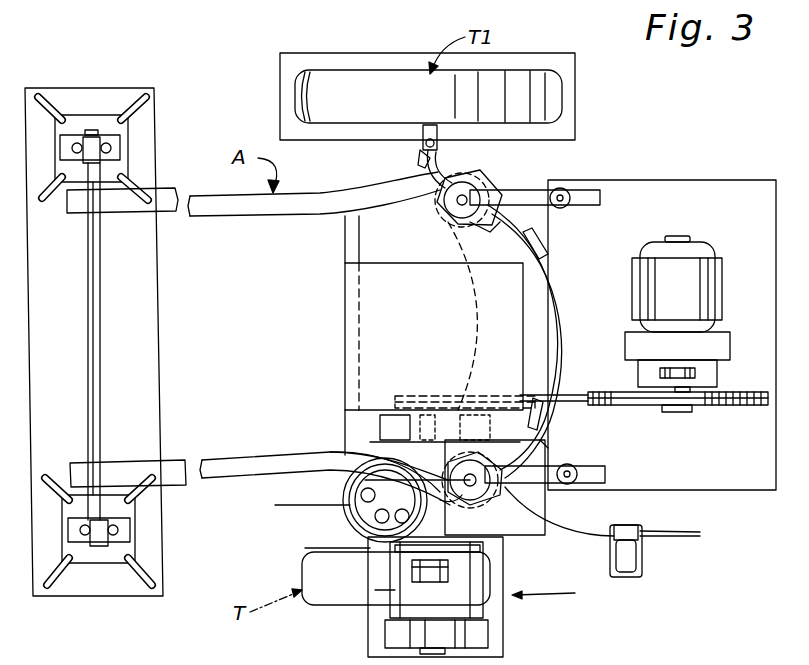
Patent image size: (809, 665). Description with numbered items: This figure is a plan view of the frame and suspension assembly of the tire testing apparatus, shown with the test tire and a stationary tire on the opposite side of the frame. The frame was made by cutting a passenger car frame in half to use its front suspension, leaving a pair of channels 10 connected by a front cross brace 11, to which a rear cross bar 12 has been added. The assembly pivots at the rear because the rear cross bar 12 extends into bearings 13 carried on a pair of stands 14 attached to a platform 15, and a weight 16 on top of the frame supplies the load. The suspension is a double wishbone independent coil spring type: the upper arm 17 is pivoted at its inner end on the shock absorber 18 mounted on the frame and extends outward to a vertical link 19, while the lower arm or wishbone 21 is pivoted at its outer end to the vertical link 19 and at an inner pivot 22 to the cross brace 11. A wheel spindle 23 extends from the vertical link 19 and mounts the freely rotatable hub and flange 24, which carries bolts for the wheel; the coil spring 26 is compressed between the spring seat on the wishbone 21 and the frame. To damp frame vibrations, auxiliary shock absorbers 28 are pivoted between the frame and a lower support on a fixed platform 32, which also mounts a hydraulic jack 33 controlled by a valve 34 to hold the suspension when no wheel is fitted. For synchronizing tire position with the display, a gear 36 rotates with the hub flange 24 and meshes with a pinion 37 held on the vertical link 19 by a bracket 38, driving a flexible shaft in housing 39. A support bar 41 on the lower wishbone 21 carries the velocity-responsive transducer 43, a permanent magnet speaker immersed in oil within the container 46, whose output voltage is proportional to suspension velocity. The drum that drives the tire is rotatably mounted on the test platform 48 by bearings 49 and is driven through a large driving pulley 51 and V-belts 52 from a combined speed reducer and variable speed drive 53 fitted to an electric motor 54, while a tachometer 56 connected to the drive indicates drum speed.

The channels 10 is at (598, 196).
The front cross brace 11 is at (552, 318).
The rear cross bar 12 is at (95, 298).
The bearings 13 is at (110, 142).
The stands 14 is at (118, 172).
The platform 15 is at (143, 325).
The weight 16 is at (378, 322).
The upper arm 17 is at (472, 184).
The shock absorber 18 is at (478, 225).
The vertical link 19 is at (420, 156).
The lower arm or wishbone 21 is at (432, 178).
The inner pivot 22 is at (540, 252).
The wheel spindle 23 is at (436, 127).
The hub and flange 24 is at (375, 590).
The coil spring 26 is at (440, 210).
The auxiliary shock absorbers 28 is at (572, 207).
The fixed platform 32 is at (700, 480).
The hydraulic jack 33 is at (495, 512).
The valve 34 is at (645, 542).
The gear 36 is at (480, 580).
The pinion 37 is at (325, 549).
The bracket 38 is at (470, 555).
The housing 39 is at (300, 505).
The support bar 41 is at (370, 480).
The transducer 43 is at (365, 485).
The container 46 is at (360, 515).
The test platform 48 is at (495, 647).
The bearings 49 is at (418, 440).
The large driving pulley 51 is at (700, 410).
The V-belts 52 is at (582, 405).
The combined speed reducer and variable speed drive 53 is at (725, 340).
The electric motor 54 is at (677, 284).
The tachometer 56 is at (668, 375).